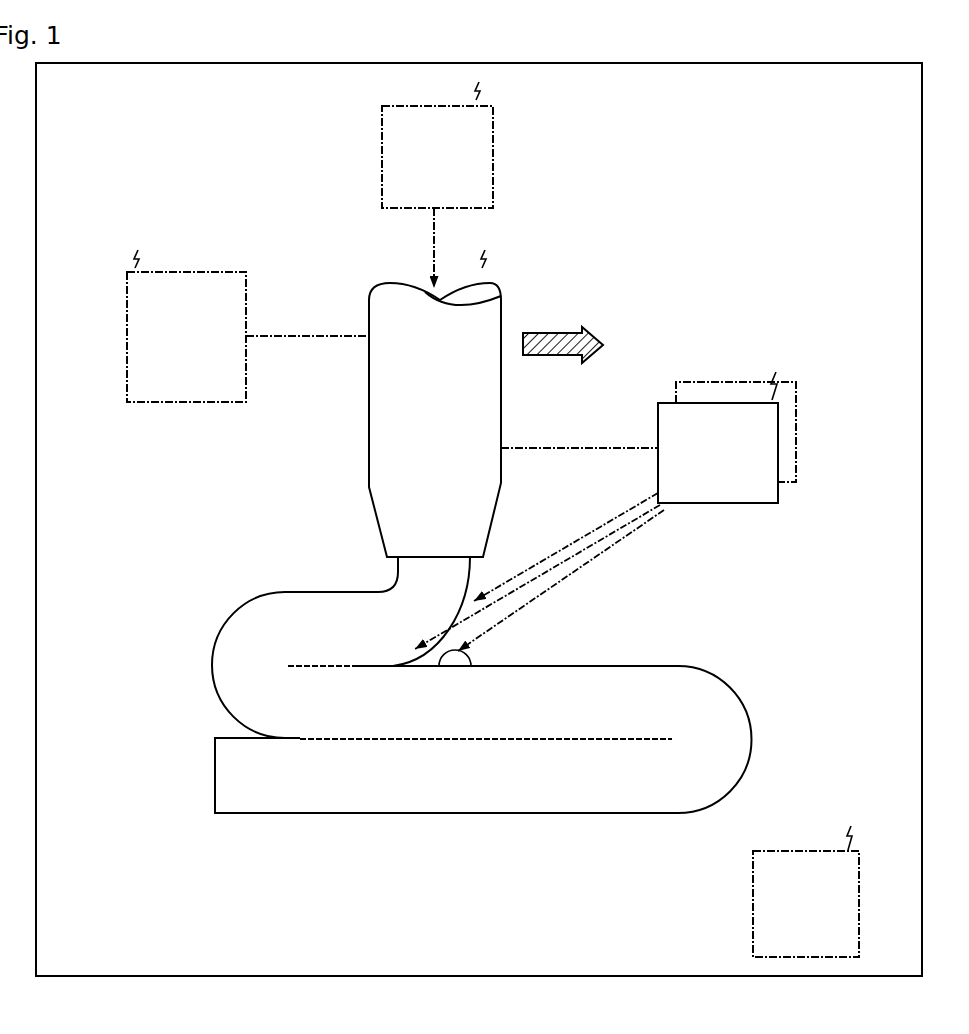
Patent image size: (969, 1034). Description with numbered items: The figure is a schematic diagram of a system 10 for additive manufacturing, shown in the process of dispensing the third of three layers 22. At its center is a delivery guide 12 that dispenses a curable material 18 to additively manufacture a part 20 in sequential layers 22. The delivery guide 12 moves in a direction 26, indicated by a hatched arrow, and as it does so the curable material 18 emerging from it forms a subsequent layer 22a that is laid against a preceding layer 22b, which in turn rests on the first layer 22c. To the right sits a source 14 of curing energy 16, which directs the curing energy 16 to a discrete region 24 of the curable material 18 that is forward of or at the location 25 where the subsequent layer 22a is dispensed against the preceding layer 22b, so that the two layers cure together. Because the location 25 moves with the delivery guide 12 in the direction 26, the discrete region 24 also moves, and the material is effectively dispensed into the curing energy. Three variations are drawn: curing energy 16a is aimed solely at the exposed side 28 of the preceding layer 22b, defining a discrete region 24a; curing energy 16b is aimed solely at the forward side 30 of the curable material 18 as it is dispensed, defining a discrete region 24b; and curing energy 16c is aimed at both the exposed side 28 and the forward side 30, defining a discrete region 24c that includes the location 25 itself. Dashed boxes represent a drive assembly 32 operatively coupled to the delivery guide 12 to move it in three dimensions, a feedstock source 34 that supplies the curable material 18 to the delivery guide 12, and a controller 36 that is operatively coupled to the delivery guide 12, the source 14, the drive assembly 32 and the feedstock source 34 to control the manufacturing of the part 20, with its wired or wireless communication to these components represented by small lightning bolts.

The system for additive manufacturing 10 is at (876, 60).
The delivery guide 12 is at (369, 427).
The source of curing energy 14 is at (748, 382).
The curing energy 16 is at (662, 542).
The curing energy 16a is at (595, 557).
The curing energy 16b is at (550, 555).
The curing energy 16c is at (600, 533).
The curable material 18 is at (478, 155).
The part 20 is at (728, 607).
The layers 22 is at (110, 640).
The subsequent layer 22a is at (203, 625).
The preceding layer 22b is at (203, 705).
The first layer 22c is at (203, 783).
The discrete region 24 is at (562, 600).
The discrete region 24a is at (462, 682).
The discrete region 24b is at (447, 598).
The discrete region 24c is at (412, 682).
The location 25 is at (390, 668).
The direction 26 is at (560, 333).
The exposed side 28 is at (468, 653).
The forward side 30 is at (462, 615).
The drive assembly 32 is at (192, 272).
The feedstock source 34 is at (382, 150).
The controller 36 is at (793, 851).